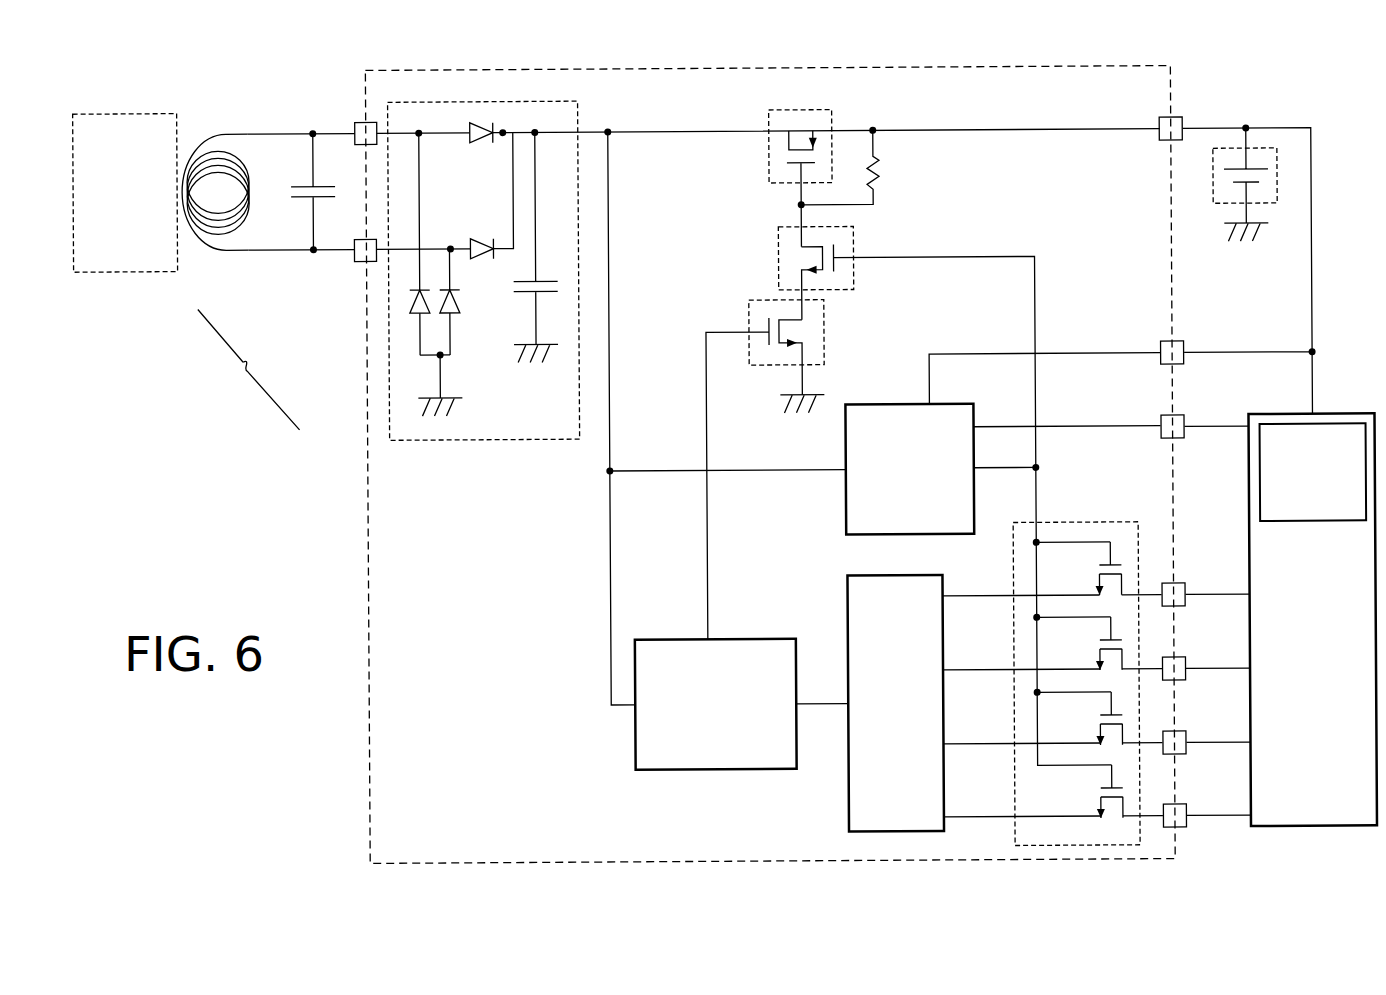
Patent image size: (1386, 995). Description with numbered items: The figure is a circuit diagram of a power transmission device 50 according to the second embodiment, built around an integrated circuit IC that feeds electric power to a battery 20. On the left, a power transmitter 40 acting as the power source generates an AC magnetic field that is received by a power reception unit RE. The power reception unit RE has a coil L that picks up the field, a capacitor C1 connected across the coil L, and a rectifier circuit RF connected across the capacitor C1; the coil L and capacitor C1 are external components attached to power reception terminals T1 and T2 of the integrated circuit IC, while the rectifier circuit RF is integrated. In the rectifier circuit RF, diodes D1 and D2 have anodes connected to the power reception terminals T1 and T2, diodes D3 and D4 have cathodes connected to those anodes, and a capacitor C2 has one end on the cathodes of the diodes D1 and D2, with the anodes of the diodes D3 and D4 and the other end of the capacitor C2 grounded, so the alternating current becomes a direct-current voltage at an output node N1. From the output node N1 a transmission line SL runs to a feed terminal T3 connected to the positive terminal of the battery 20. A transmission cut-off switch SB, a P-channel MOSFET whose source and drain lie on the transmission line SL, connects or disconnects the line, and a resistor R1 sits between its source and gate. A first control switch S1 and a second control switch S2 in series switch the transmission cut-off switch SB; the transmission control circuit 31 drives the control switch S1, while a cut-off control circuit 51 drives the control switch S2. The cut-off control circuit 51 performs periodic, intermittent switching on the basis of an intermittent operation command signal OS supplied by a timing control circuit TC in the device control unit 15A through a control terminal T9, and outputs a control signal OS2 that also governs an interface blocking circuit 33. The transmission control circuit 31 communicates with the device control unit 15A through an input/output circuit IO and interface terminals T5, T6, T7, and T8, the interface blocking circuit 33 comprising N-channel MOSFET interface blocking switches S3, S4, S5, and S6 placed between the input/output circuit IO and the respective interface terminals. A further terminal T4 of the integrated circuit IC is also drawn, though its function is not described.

The integrated circuit IC is at (368, 538).
The power transmitter 40 is at (115, 268).
The power transmission device 50 is at (207, 105).
The coil L is at (222, 236).
The capacitor C1 is at (290, 200).
The power reception unit RE is at (249, 370).
The power reception terminal T1 is at (354, 119).
The power reception terminal T2 is at (354, 264).
The rectifier circuit RF is at (389, 407).
The diode D1 is at (475, 148).
The diode D2 is at (475, 236).
The diode D3 is at (408, 244).
The diode D4 is at (463, 302).
The capacitor C2 is at (542, 247).
The output node N1 is at (720, 402).
The power transmission line SL is at (679, 133).
The transmission cut-off switch SB is at (771, 120).
The resistor R1 is at (861, 167).
The second control switch S2 is at (780, 250).
The first control switch S1 is at (750, 310).
The cut-off control circuit 51 is at (882, 405).
The control signal OS2 is at (1007, 457).
The intermittent operation command signal OS is at (1216, 412).
The transmission control circuit 31 is at (663, 639).
The input/output circuit IO is at (847, 600).
The interface blocking circuit 33 is at (1076, 649).
The interface blocking switch S3 is at (1093, 568).
The interface blocking switch S4 is at (1094, 643).
The interface blocking switch S5 is at (1094, 718).
The interface blocking switch S6 is at (1095, 791).
The power transmission terminal T3 is at (1182, 115).
The terminal T4 is at (1183, 339).
The interface terminal T5 is at (1186, 609).
The interface terminal T6 is at (1186, 683).
The interface terminal T7 is at (1186, 758).
The interface terminal T8 is at (1186, 829).
The control terminal T9 is at (1185, 441).
The battery 20 is at (1273, 147).
The device control unit 15A is at (1286, 585).
The timing control circuit TC is at (1249, 488).